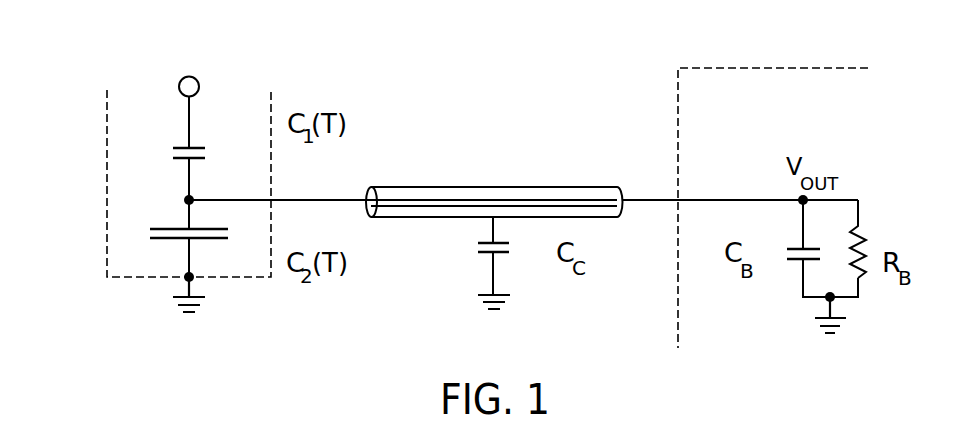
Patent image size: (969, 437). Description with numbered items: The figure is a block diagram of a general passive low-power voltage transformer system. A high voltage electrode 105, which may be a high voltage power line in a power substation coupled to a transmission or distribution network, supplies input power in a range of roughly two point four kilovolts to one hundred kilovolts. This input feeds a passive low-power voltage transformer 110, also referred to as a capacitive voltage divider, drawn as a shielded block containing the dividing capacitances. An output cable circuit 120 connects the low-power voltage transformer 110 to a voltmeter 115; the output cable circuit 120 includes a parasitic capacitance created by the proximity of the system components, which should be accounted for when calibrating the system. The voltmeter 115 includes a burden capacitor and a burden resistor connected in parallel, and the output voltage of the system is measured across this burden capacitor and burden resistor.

The high voltage electrode 105 is at (182, 76).
The passive low-power voltage transformer 110 is at (107, 128).
The voltmeter 115 is at (693, 68).
The output cable circuit 120 is at (600, 187).